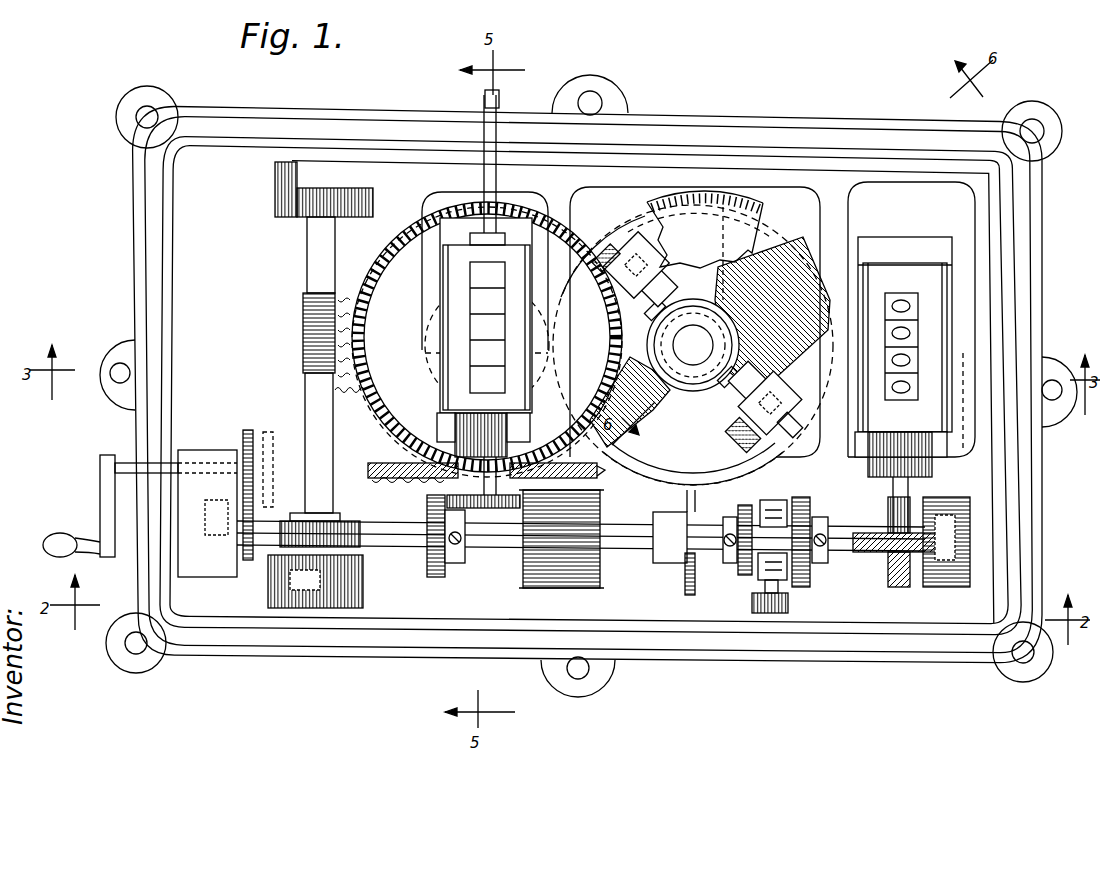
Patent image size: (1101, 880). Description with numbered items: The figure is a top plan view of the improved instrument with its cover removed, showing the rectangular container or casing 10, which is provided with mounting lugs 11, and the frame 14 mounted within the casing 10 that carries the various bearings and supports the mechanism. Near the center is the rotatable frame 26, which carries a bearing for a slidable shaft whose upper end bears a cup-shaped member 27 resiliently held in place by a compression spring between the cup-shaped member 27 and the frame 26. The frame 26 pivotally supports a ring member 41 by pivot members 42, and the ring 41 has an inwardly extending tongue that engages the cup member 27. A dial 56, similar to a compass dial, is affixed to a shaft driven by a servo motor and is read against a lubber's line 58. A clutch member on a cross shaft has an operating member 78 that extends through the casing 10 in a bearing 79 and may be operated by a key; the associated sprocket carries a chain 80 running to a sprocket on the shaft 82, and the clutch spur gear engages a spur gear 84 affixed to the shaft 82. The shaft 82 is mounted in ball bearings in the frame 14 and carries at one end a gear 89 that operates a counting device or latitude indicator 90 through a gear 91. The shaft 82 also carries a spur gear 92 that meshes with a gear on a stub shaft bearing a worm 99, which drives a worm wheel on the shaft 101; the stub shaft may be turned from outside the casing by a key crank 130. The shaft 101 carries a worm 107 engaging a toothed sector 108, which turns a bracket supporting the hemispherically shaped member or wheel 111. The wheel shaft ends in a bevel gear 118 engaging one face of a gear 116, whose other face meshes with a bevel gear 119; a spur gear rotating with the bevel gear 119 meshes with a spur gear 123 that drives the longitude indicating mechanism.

The container or casing 10 is at (1040, 252).
The mounting lugs 11 is at (1047, 118).
The frame 14 is at (1010, 318).
The rotatable frame 26 is at (703, 400).
The cup-shaped member 27 is at (668, 405).
The ring member 41 is at (680, 478).
The pivot members 42 is at (607, 250).
The dial 56 is at (650, 202).
The lubber's line 58 is at (700, 167).
The operating member 78 is at (780, 505).
The bearing 79 is at (790, 607).
The chain 80 is at (748, 515).
The shaft 82 is at (637, 546).
The spur gear 84 is at (810, 505).
The gear 89 is at (890, 566).
The counting device or latitude indicator 90 is at (909, 343).
The gear 91 is at (890, 533).
The spur gear 92 is at (435, 578).
The worm 99 is at (350, 517).
The shaft 101 is at (305, 407).
The worm 107 is at (303, 333).
The toothed sector 108 is at (358, 423).
The hemispherically shaped member or wheel 111 is at (440, 307).
The gear 116 is at (400, 465).
The bevel gear 118 is at (598, 477).
The bevel gear 119 is at (555, 470).
The spur gear 123 is at (507, 510).
The key crank 130 is at (100, 493).